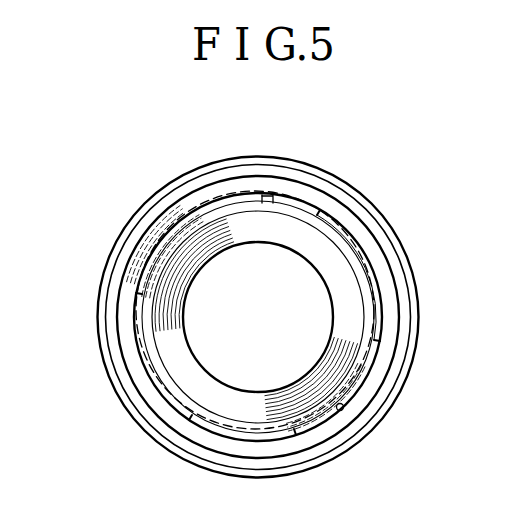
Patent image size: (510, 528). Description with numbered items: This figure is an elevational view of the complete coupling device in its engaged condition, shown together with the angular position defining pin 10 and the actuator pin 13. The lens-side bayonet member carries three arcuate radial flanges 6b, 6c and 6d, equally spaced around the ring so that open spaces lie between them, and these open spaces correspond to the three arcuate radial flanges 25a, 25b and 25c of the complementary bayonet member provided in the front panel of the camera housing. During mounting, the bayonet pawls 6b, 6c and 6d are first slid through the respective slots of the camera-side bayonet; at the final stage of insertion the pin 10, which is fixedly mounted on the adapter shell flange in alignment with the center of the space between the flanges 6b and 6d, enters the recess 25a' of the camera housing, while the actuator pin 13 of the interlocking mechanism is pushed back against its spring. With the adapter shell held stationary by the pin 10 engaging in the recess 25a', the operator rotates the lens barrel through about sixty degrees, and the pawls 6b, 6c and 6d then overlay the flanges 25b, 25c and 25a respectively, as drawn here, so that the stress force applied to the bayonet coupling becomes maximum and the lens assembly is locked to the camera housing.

The angular position defining pin 10 is at (268, 193).
The recess 25a' is at (255, 270).
The arcuate radial flange 25a is at (308, 161).
The arcuate radial flange 6d is at (325, 212).
The arcuate radial flange 6b is at (383, 365).
The actuator pin 13 is at (343, 409).
The arcuate radial flange 25b is at (328, 423).
The arcuate radial flange 6c is at (182, 412).
The arcuate radial flange 25c is at (133, 330).